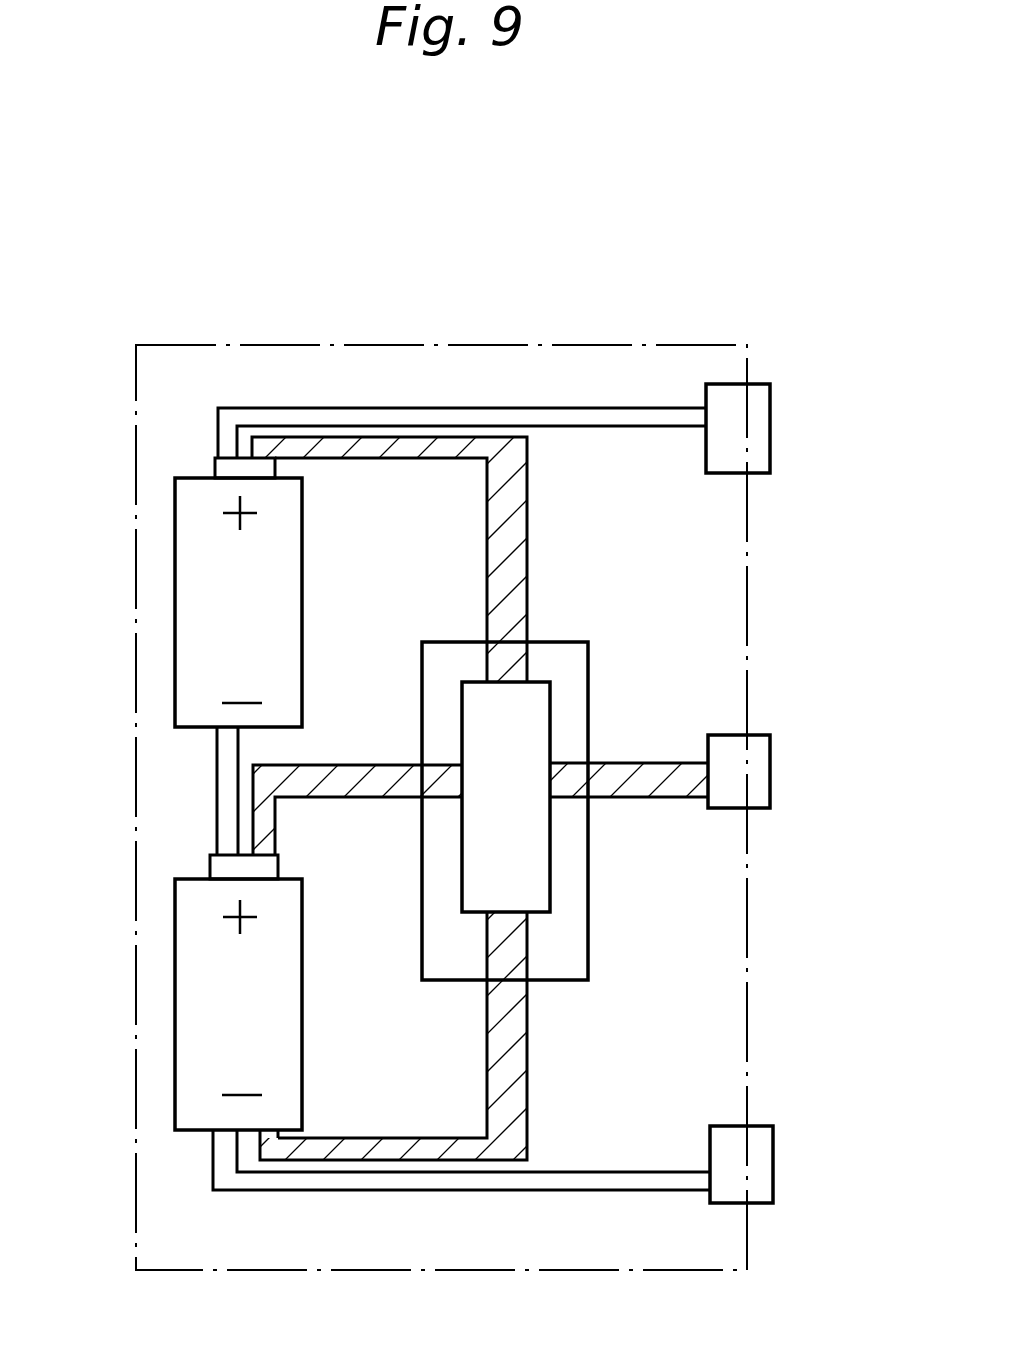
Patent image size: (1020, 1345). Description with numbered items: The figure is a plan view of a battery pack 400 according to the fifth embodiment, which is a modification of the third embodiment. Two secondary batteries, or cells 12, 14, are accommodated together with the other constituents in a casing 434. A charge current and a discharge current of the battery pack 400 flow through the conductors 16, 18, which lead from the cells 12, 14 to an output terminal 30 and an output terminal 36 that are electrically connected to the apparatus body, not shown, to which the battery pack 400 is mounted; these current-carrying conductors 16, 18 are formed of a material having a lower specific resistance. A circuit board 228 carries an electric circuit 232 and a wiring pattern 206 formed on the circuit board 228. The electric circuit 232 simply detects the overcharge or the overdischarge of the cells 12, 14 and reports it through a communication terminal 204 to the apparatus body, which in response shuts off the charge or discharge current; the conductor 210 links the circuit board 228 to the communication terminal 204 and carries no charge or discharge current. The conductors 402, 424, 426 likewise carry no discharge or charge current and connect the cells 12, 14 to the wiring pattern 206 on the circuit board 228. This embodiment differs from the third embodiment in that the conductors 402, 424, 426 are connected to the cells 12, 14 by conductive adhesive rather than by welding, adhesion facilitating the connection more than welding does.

The battery pack 400 is at (513, 162).
The casing 434 is at (462, 347).
The secondary battery 12 is at (303, 512).
The secondary battery 14 is at (304, 1072).
The conductor 16 is at (484, 406).
The conductor 18 is at (217, 788).
The output terminal 30 is at (757, 384).
The communication terminal 204 is at (760, 737).
The output terminal 36 is at (760, 1125).
The conductor 424 is at (527, 487).
The conductor 402 is at (527, 1066).
The conductor 426 is at (344, 765).
The conductor 210 is at (633, 800).
The wiring pattern 206 is at (545, 642).
The circuit board 228 is at (588, 652).
The electric circuit 232 is at (550, 697).